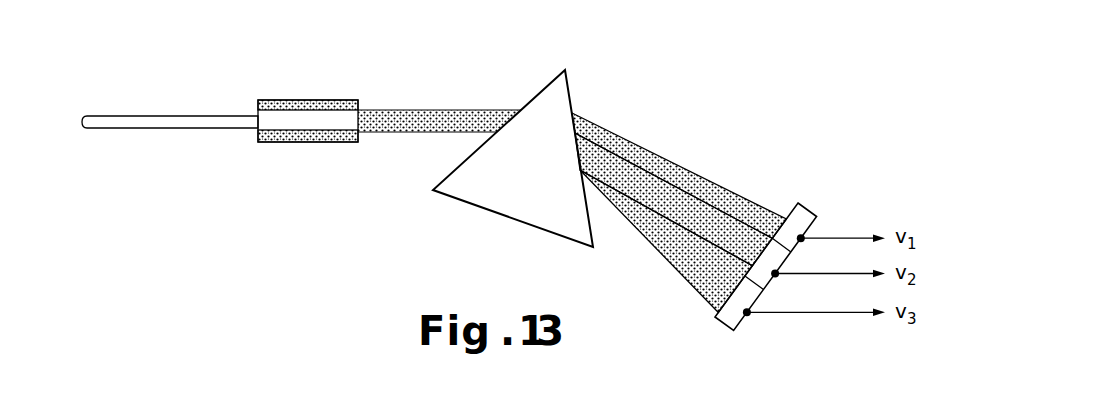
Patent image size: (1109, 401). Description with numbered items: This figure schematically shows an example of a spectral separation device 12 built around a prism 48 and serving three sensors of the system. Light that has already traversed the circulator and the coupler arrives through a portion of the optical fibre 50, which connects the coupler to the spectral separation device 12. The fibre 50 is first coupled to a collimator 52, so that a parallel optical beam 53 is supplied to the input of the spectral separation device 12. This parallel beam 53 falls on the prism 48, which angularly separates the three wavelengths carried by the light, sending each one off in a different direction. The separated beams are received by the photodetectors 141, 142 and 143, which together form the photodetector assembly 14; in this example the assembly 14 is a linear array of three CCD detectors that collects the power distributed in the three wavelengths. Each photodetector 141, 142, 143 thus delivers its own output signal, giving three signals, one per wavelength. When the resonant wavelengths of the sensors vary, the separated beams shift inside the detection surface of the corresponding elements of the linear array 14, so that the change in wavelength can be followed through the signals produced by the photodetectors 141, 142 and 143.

The spectral separation device 12 is at (614, 97).
The photodetector assembly 14 is at (776, 191).
The photodetector 141 is at (807, 202).
The photodetector 142 is at (762, 278).
The photodetector 143 is at (720, 328).
The prism 48 is at (508, 210).
The optical fibre 50 is at (168, 130).
The collimator 52 is at (315, 100).
The parallel optical beam 53 is at (448, 130).